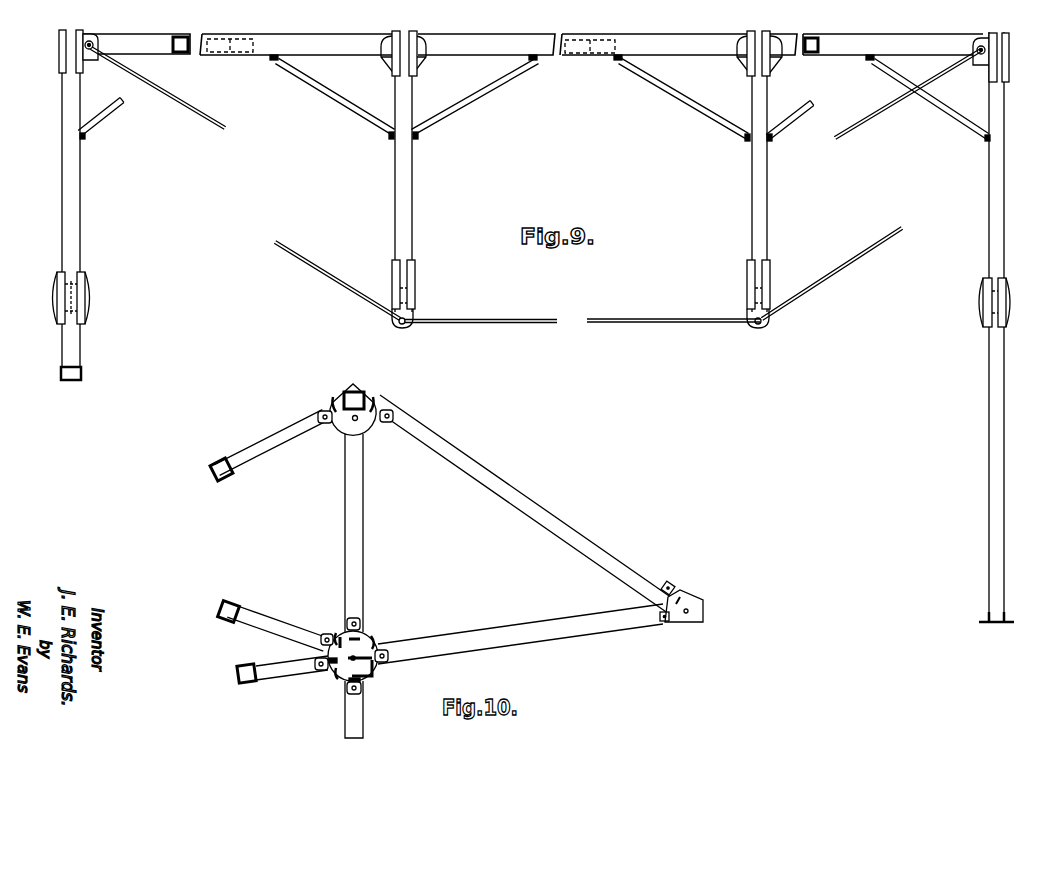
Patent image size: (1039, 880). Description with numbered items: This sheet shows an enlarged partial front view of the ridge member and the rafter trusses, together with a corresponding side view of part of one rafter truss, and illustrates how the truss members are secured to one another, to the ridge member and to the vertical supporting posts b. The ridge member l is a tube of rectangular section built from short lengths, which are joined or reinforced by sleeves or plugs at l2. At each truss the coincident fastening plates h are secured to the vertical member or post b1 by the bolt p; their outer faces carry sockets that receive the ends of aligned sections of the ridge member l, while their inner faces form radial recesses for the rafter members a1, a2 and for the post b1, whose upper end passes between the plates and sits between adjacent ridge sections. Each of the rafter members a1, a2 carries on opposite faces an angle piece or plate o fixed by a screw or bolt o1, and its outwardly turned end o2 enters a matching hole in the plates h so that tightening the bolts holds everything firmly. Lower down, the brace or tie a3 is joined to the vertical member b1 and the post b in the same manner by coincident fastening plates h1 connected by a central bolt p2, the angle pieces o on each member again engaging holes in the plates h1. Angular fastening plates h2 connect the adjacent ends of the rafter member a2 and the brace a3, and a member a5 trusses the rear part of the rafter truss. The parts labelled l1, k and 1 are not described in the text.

In FIG. 9, the ridge member l is at (304, 35).
In FIG. 9, the diagonal brace l1 is at (106, 110).
In FIG. 9, the sleeves or plugs l2 is at (236, 40).
In FIG. 9, the coincident fastening plates h is at (89, 58).
In FIG. 10, the coincident fastening plates h is at (374, 423).
In FIG. 9, the coincident fastening plates h1 is at (86, 289).
In FIG. 10, the coincident fastening plates h1 is at (384, 638).
In FIG. 10, the fastening plates of angular shape h2 is at (678, 587).
In FIG. 9, the vertical supporting post b is at (537, 326).
In FIG. 10, the vertical supporting post b is at (370, 586).
In FIG. 9, the vertical member or post b1 is at (81, 192).
In FIG. 10, the vertical member or post b1 is at (363, 520).
In FIG. 9, the folding rod k is at (212, 123).
In FIG. 10, the square opening of hub 1 is at (358, 391).
In FIG. 10, the angle piece or plate o is at (395, 414).
In FIG. 10, the screw or bolt o1 is at (320, 414).
In FIG. 10, the outwardly turned end o2 is at (335, 395).
In FIG. 10, the bolt p is at (358, 421).
In FIG. 10, the central bolt p2 is at (387, 653).
In FIG. 10, the rafter member a1 is at (280, 448).
In FIG. 10, the rafter member a2 is at (473, 472).
In FIG. 10, the brace or tie a3 is at (427, 650).
In FIG. 10, the reinforcing truss member a5 is at (243, 613).